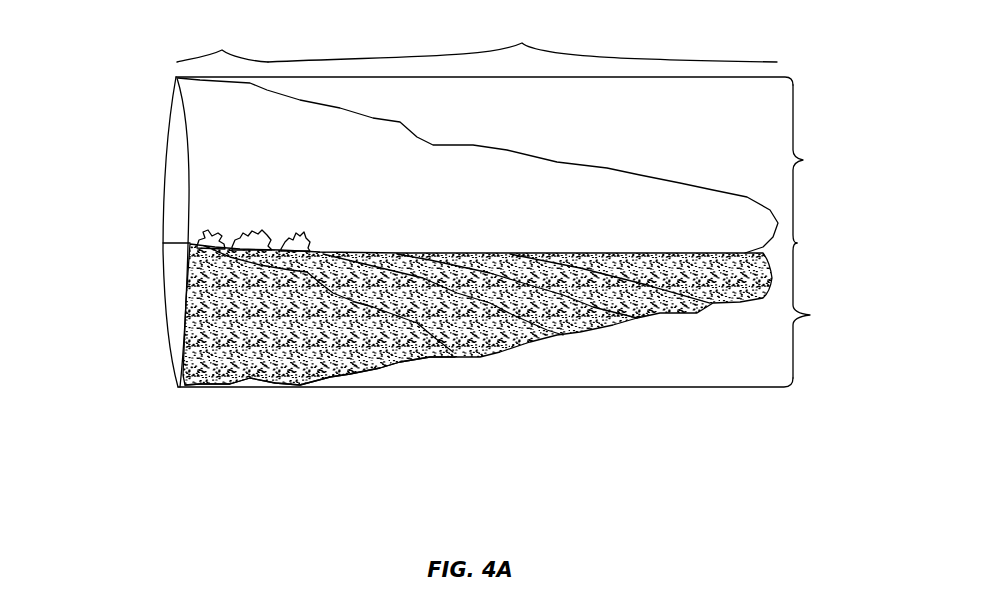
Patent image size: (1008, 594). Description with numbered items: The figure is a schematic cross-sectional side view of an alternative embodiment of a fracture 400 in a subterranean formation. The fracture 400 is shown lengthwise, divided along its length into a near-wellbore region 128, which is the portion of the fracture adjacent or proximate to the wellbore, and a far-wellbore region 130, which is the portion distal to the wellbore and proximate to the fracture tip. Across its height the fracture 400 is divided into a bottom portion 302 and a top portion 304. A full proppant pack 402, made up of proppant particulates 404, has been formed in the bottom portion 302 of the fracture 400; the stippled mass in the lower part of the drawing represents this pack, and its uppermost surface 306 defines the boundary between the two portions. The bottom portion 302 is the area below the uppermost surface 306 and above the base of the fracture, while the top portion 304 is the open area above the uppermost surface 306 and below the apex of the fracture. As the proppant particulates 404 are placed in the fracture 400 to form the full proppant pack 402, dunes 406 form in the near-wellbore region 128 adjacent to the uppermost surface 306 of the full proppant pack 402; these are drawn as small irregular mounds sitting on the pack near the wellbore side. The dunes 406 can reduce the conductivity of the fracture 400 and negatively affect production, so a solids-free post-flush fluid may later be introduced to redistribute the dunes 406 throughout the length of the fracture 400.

The fracture 400 is at (462, 231).
The near-wellbore region 128 is at (222, 50).
The far-wellbore region 130 is at (522, 43).
The top portion 304 is at (803, 160).
The bottom portion 302 is at (810, 315).
The uppermost surface 306 is at (650, 246).
The full proppant pack 402 is at (210, 311).
The proppant particulates 404 is at (232, 384).
The dunes 406 is at (222, 232).